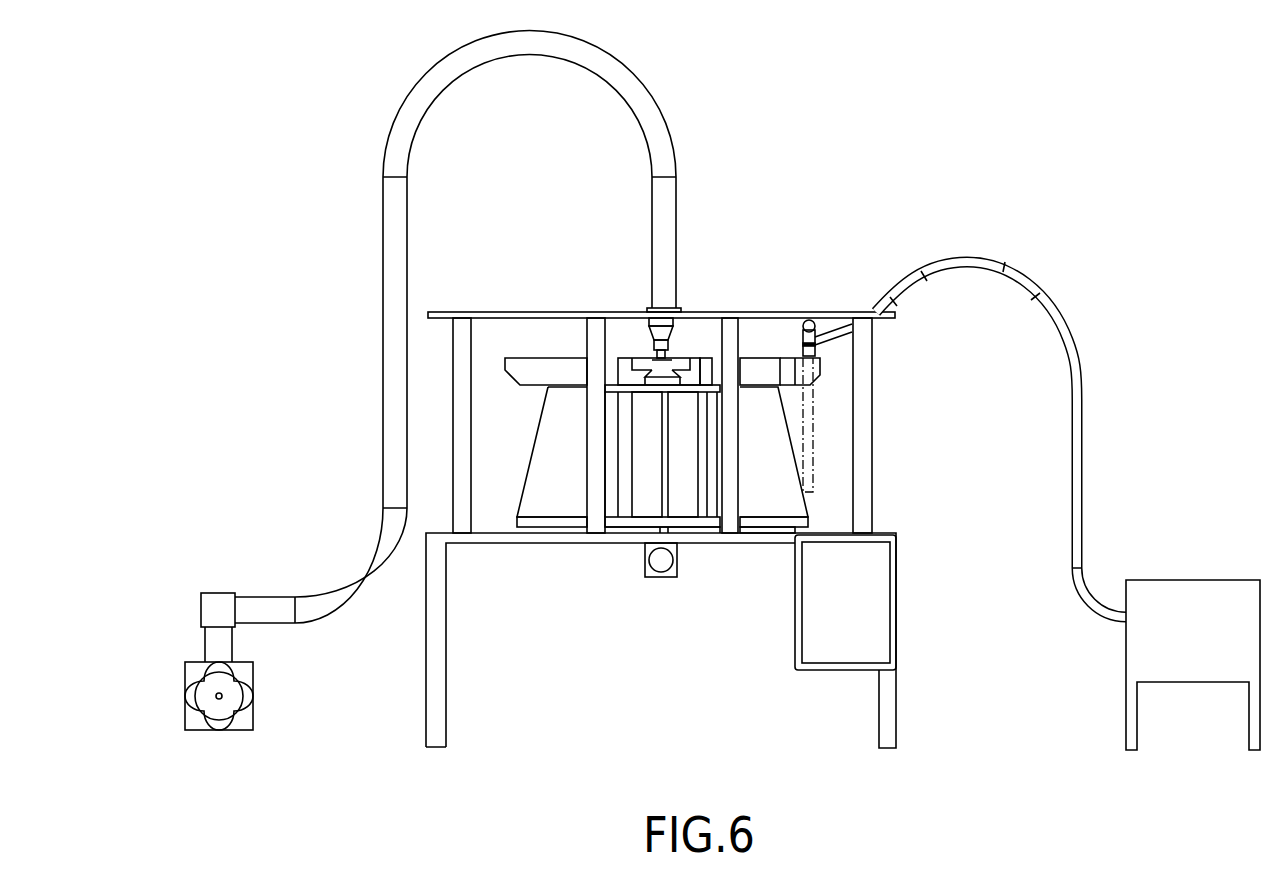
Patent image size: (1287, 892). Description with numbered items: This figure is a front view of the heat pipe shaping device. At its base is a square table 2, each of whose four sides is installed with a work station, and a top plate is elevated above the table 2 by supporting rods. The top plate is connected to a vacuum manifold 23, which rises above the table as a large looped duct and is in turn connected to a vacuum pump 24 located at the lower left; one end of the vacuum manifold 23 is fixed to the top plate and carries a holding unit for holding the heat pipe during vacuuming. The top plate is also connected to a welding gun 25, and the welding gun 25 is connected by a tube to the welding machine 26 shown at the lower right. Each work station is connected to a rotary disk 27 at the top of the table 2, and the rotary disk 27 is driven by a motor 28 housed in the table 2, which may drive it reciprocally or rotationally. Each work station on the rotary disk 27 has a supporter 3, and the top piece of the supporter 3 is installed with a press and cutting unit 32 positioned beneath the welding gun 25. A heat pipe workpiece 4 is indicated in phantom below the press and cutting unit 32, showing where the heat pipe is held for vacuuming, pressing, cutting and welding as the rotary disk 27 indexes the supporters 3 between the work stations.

The table 2 is at (577, 563).
The supporter 3 is at (538, 502).
The workpiece (phantom) 4 is at (810, 423).
The vacuum manifold 23 is at (665, 208).
The vacuum pump 24 is at (196, 696).
The welding gun 25 is at (839, 332).
The welding machine 26 is at (1195, 608).
The rotary disk 27 is at (766, 520).
The motor 28 is at (657, 574).
The press and cutting unit 32 is at (788, 358).